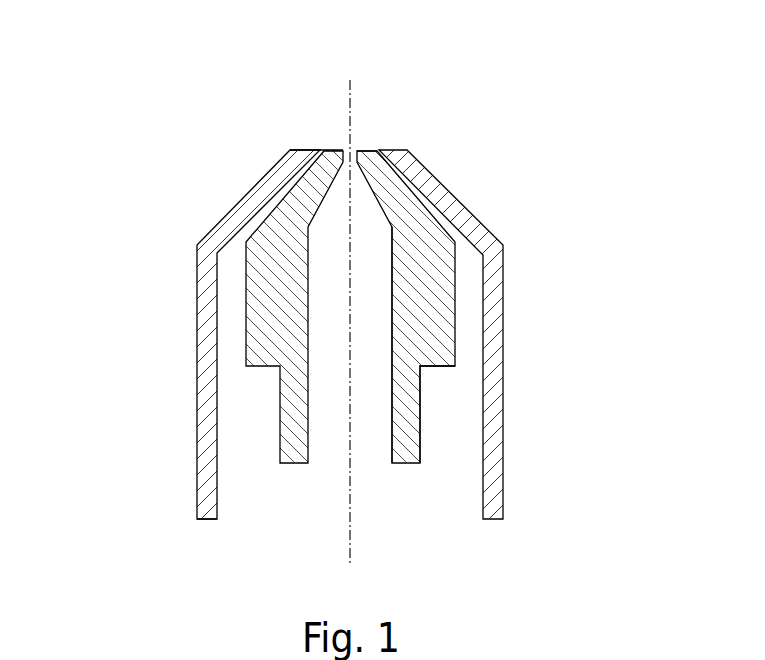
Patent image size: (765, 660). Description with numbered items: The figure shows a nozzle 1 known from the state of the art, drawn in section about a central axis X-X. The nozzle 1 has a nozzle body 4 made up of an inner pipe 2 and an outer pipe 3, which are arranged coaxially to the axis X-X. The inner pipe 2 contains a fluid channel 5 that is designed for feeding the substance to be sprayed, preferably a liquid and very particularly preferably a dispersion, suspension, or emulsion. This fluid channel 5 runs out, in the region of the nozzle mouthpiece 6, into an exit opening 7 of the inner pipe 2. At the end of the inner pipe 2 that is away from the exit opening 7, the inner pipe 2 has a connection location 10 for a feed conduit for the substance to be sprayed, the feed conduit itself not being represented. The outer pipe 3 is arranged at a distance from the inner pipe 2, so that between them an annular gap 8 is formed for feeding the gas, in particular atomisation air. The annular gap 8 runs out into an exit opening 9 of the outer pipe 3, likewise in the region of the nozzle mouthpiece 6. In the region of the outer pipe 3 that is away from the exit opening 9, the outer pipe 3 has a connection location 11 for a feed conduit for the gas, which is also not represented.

The nozzle 1 is at (130, 45).
The inner pipe 2 is at (437, 355).
The outer pipe 3 is at (490, 460).
The nozzle body 4 is at (525, 172).
The fluid channel 5 is at (372, 346).
The nozzle mouthpiece 6 is at (178, 115).
The exit opening of the inner pipe 7 is at (359, 143).
The annular gap 8 is at (461, 277).
The exit opening of the outer pipe 9 is at (322, 144).
The connection location 10 is at (428, 411).
The connection location 11 is at (205, 528).